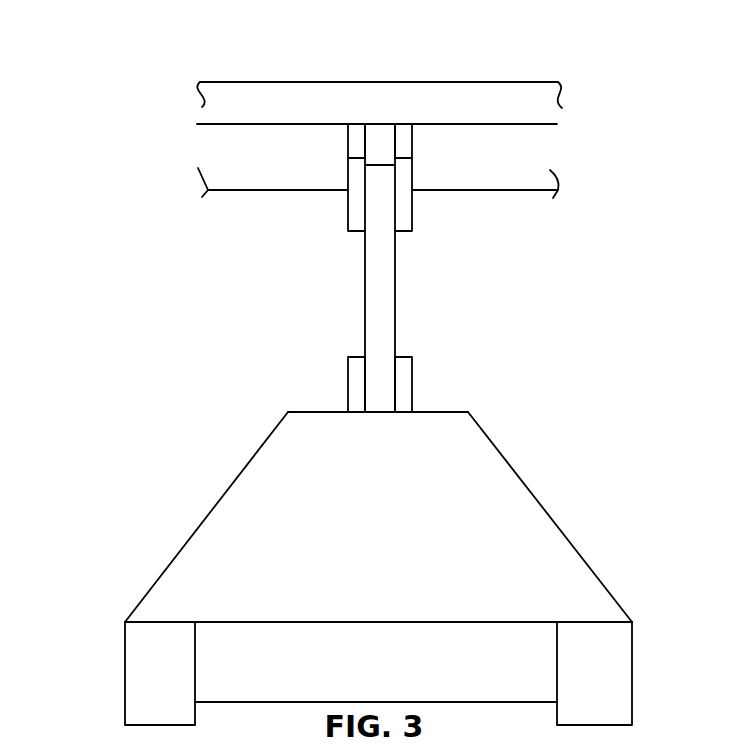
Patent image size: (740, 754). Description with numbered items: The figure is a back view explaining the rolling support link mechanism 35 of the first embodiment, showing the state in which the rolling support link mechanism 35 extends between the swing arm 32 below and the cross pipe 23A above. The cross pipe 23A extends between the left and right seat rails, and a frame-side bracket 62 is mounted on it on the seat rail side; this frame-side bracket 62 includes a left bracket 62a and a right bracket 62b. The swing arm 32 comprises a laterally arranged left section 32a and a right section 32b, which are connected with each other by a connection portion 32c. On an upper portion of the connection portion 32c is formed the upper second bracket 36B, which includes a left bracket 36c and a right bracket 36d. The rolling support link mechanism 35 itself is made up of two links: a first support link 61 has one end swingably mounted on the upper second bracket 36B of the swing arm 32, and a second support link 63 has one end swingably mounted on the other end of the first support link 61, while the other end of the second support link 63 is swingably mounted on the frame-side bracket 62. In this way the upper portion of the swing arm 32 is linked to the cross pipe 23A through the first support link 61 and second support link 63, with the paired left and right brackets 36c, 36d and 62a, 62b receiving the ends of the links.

The cross pipe 23A is at (263, 90).
The rolling support link mechanism 35 is at (355, 213).
The first support link 61 is at (383, 338).
The frame-side bracket 62 is at (371, 128).
The left bracket 62a is at (352, 138).
The right bracket 62b is at (410, 152).
The second support link 63 is at (408, 222).
The upper second bracket 36B is at (370, 364).
The left bracket 36c is at (346, 395).
The right bracket 36d is at (405, 390).
The swing arm 32 is at (365, 568).
The left section 32a is at (142, 690).
The right section 32b is at (603, 690).
The connection portion 32c is at (533, 528).